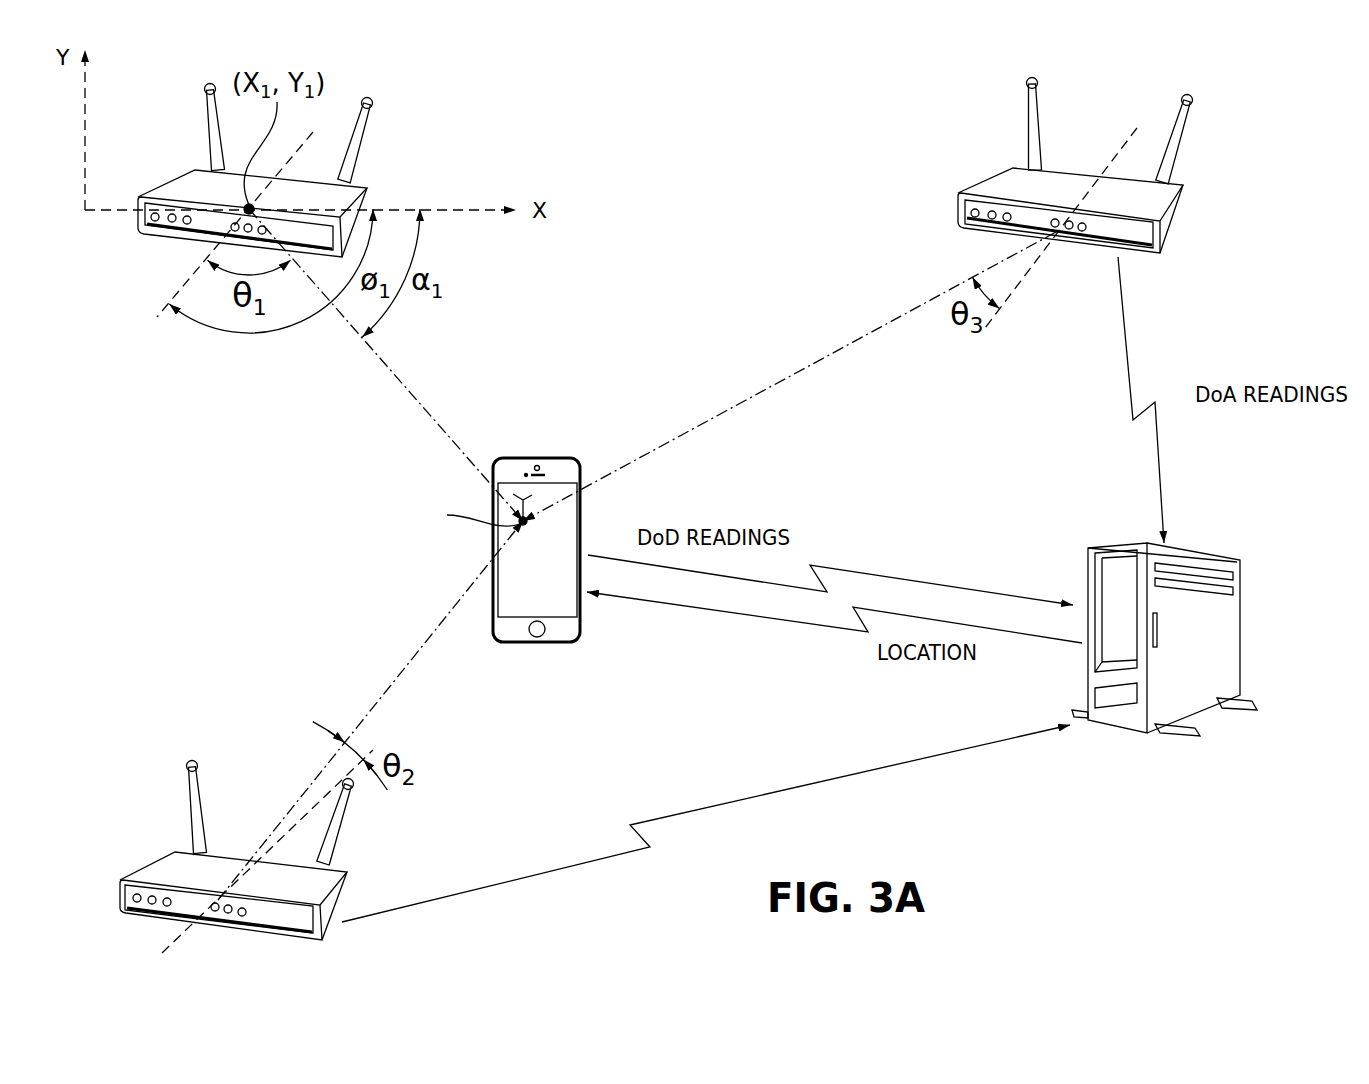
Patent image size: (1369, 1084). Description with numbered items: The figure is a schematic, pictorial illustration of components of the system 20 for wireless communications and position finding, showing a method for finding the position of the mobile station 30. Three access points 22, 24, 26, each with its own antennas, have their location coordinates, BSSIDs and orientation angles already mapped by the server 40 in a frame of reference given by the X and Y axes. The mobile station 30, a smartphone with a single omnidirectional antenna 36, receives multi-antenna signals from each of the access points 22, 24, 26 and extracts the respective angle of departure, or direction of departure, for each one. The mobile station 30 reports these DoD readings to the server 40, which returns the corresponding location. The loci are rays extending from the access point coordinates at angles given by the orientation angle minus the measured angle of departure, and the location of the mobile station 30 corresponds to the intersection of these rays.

The system 20 is at (1050, 823).
The access point 22 is at (180, 188).
The access point 24 is at (1187, 187).
The access point 26 is at (347, 872).
The mobile station 30 is at (471, 549).
The omnidirectional antenna 36 is at (513, 493).
The server 40 is at (1240, 613).